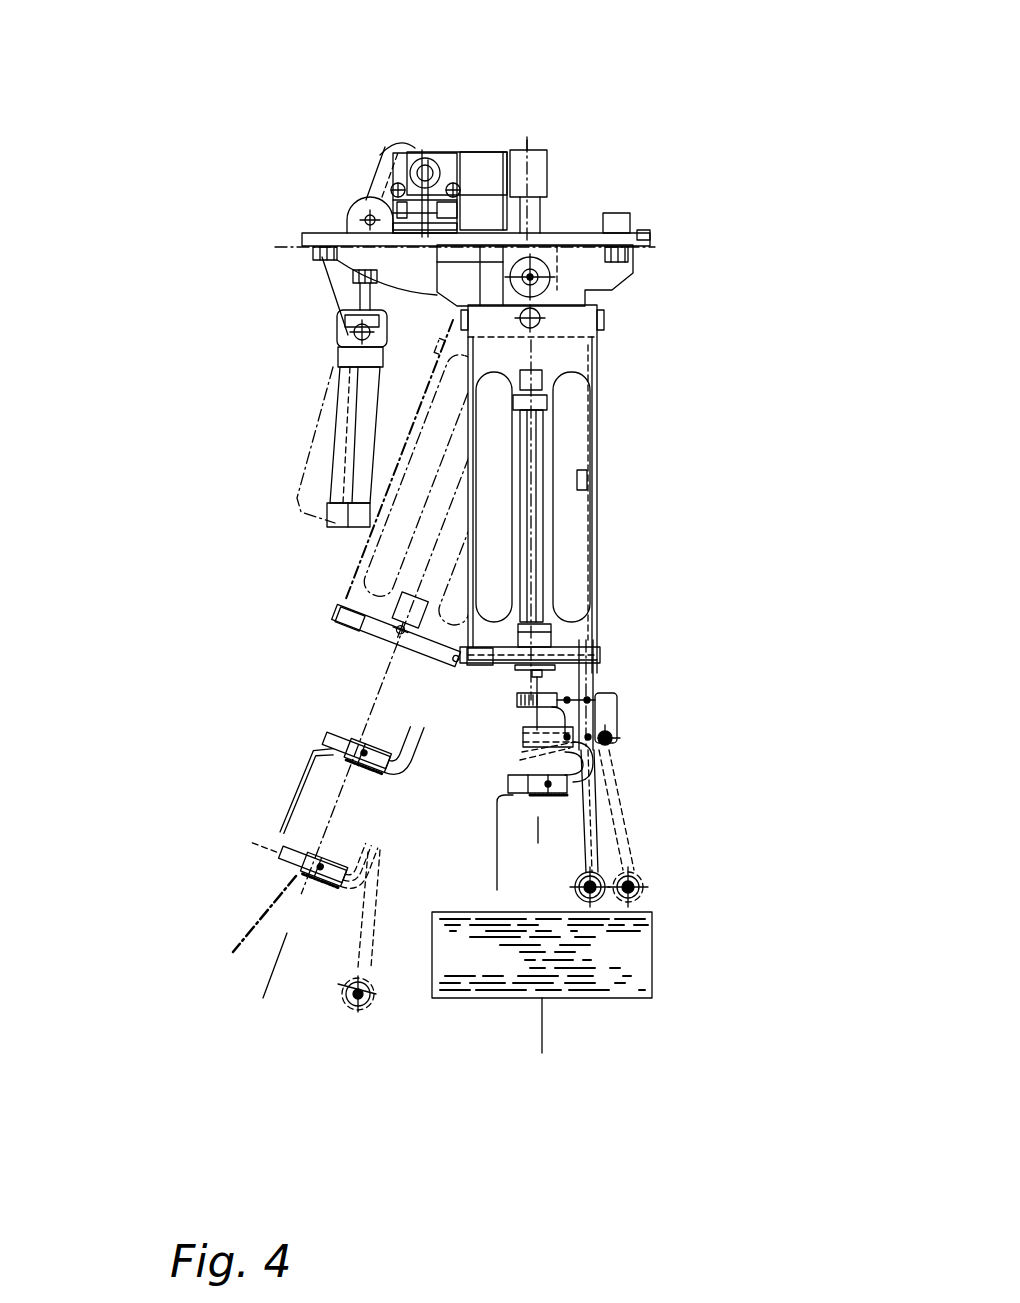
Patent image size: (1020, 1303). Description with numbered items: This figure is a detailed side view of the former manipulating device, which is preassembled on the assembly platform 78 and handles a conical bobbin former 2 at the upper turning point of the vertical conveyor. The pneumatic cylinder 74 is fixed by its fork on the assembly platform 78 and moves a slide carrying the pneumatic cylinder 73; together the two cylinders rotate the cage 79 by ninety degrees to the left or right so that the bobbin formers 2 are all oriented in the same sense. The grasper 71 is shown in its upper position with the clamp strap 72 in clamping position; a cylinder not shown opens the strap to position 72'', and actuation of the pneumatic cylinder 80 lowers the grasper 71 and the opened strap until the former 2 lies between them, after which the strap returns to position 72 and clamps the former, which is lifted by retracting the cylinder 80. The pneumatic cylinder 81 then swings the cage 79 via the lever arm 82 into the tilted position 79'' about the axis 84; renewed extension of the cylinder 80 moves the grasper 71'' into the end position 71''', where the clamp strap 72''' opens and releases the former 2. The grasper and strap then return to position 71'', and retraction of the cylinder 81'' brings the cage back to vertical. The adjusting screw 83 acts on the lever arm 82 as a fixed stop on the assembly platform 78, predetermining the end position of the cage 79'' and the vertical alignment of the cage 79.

The assembly platform 78 is at (320, 232).
The pneumatic cylinder 73 is at (440, 158).
The pneumatic cylinder 74 is at (455, 188).
The lever arm 82 is at (405, 268).
The axis 84 is at (552, 276).
The adjusting screw 83 is at (357, 292).
The pneumatic cylinder 81 is at (284, 437).
The pneumatic cylinder (retracted position) 81'' is at (224, 460).
The cage 79 is at (629, 489).
The cage (swung position) 79'' is at (324, 616).
The pneumatic cylinder 80 is at (542, 508).
The grasper 71 is at (353, 949).
The grasper (intermediate position) 71'' is at (253, 780).
The grasper (end position) 71''' is at (216, 901).
The clamp strap 72 is at (688, 773).
The clamp strap (opened position) 72'' is at (704, 810).
The clamp strap (end position) 72''' is at (381, 1052).
The conical bobbin former 2 is at (634, 953).